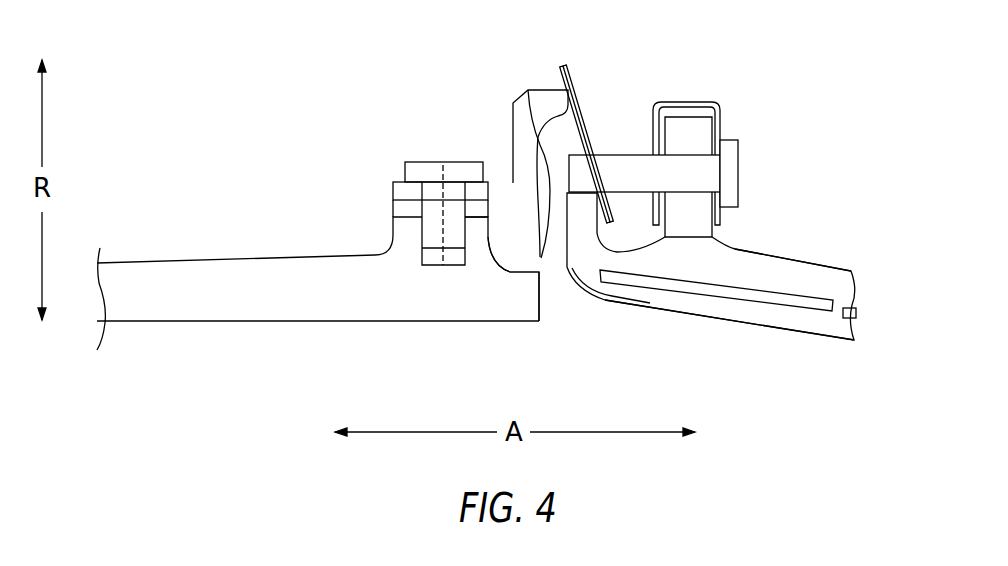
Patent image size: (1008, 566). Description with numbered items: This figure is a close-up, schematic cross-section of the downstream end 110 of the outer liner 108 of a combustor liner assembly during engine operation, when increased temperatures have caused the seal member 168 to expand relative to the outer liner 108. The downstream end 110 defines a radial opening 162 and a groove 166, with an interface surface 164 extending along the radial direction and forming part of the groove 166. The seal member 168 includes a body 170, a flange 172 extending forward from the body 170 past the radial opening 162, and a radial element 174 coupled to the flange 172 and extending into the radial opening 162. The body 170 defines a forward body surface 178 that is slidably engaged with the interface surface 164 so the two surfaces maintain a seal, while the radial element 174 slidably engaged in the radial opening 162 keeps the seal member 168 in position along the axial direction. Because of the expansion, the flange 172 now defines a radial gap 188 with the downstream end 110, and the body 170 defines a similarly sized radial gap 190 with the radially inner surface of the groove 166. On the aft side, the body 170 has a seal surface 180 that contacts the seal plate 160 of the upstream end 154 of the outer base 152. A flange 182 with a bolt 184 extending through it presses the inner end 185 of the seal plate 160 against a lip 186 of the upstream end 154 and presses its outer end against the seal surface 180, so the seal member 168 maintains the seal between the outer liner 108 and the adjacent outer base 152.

The outer liner 108 is at (223, 277).
The downstream end 110 is at (295, 165).
The outer base 152 is at (806, 237).
The upstream end 154 is at (630, 333).
The seal plate 160 is at (566, 68).
The radial opening 162 is at (433, 256).
The interface surface 164 is at (531, 250).
The groove 166 is at (527, 90).
The seal member 168 is at (495, 108).
The body 170 is at (514, 183).
The flange 172 is at (393, 189).
The radial element 174 is at (430, 190).
The body surface 178 is at (487, 208).
The seal surface 180 is at (577, 100).
The flange 182 is at (692, 133).
The bolt 184 is at (695, 175).
The inner end 185 is at (620, 207).
The lip 186 is at (596, 229).
The radial gap 188 is at (397, 210).
The radial gap 190 is at (534, 262).